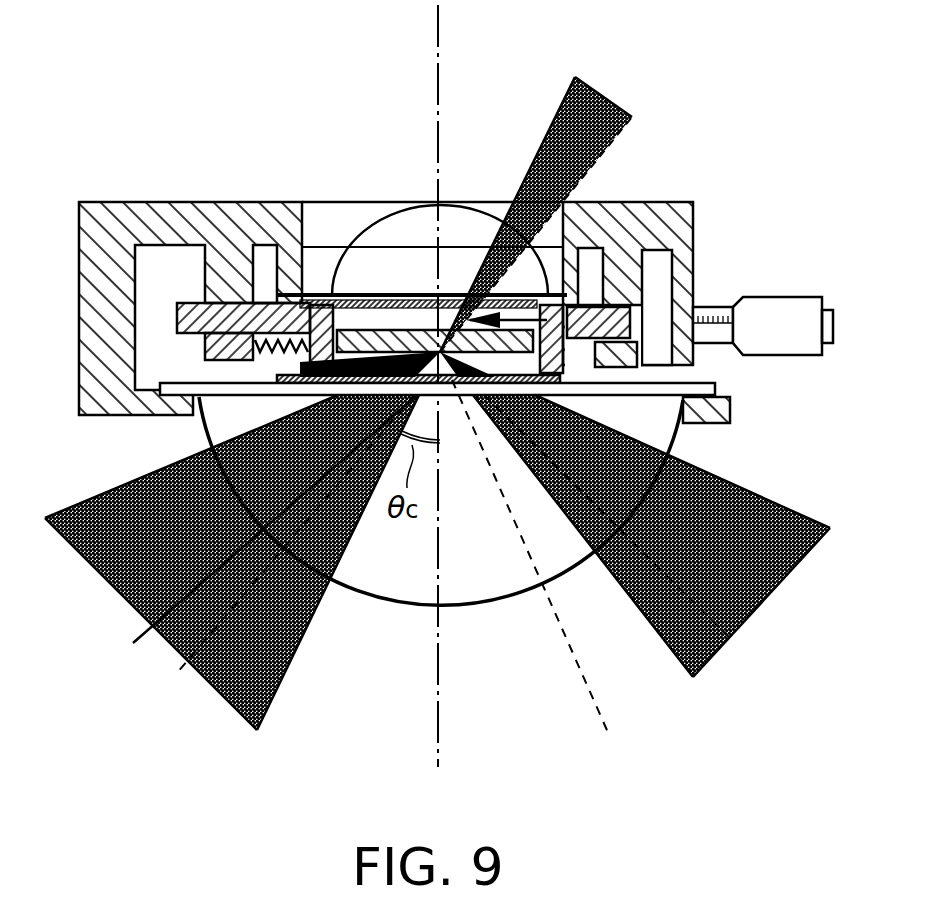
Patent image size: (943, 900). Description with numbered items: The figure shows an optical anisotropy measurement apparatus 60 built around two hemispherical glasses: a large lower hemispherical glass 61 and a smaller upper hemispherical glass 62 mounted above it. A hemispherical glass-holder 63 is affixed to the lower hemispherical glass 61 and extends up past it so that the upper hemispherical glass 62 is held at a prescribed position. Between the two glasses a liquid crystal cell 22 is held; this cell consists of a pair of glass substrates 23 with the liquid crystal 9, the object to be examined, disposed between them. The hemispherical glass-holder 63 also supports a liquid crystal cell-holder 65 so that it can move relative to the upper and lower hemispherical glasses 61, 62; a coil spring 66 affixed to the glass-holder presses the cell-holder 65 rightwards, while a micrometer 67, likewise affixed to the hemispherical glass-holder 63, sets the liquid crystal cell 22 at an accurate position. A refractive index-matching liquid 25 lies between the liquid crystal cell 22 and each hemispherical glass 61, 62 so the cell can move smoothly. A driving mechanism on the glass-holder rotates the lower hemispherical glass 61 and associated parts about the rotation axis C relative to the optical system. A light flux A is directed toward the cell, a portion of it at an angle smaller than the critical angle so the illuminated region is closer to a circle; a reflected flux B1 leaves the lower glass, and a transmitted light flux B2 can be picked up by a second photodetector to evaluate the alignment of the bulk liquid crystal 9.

The liquid crystal 9 is at (428, 327).
The liquid crystal cell 22 is at (370, 296).
The glass substrates 23 is at (400, 320).
The refractive index-matching liquid 25 is at (560, 378).
The optical anisotropy measurement apparatus 60 is at (707, 153).
The lower hemispherical glass 61 is at (490, 620).
The upper hemispherical glass 62 is at (478, 223).
The hemispherical glass-holder 63 is at (152, 200).
The liquid crystal cell-holder 65 is at (330, 296).
The coil spring 66 is at (293, 375).
The micrometer 67 is at (788, 295).
The light flux A is at (112, 490).
The reflected light beam B1 is at (767, 498).
The transmitted light flux B2 is at (550, 127).
The rotation axis C is at (436, 718).